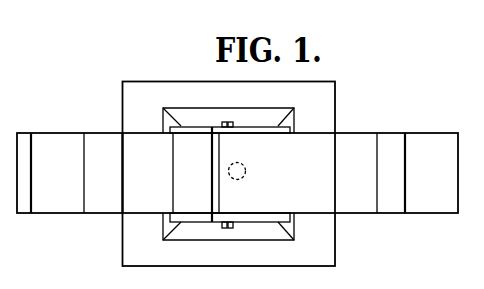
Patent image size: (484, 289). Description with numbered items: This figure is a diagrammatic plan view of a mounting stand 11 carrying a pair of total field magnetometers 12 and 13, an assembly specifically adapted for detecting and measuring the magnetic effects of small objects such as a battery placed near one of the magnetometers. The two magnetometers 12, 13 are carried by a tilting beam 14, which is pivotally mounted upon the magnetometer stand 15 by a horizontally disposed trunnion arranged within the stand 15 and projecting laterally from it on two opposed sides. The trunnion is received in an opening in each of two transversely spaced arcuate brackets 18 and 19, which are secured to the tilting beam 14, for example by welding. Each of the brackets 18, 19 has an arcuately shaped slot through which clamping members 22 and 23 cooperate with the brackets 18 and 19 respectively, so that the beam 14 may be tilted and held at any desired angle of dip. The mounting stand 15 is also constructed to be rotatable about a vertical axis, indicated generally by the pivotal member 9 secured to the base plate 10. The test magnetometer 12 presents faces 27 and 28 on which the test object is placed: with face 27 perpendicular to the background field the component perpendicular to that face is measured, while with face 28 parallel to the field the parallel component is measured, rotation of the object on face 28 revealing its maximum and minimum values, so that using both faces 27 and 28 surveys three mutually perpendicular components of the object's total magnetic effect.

The pivotal member 9 is at (245, 168).
The base plate 10 is at (237, 176).
The mounting stand 11 is at (339, 122).
The magnetometer 12 is at (70, 162).
The magnetometer 13 is at (420, 133).
The tilting beam 14 is at (295, 188).
The magnetometer stand 15 is at (294, 226).
The arcuate bracket 18 is at (194, 223).
The arcuate bracket 19 is at (264, 112).
The clamping member 22 is at (232, 229).
The clamping member 23 is at (223, 122).
The magnetometer face 27 is at (108, 189).
The magnetometer face 28 is at (155, 189).